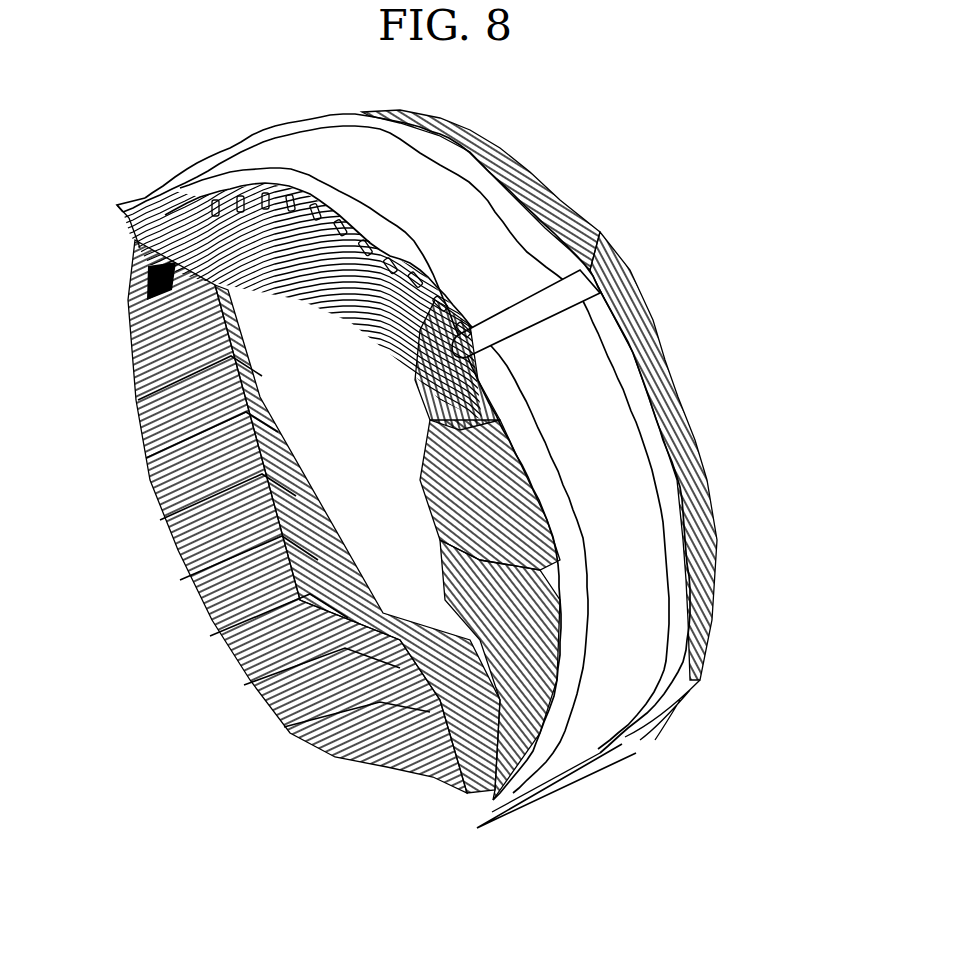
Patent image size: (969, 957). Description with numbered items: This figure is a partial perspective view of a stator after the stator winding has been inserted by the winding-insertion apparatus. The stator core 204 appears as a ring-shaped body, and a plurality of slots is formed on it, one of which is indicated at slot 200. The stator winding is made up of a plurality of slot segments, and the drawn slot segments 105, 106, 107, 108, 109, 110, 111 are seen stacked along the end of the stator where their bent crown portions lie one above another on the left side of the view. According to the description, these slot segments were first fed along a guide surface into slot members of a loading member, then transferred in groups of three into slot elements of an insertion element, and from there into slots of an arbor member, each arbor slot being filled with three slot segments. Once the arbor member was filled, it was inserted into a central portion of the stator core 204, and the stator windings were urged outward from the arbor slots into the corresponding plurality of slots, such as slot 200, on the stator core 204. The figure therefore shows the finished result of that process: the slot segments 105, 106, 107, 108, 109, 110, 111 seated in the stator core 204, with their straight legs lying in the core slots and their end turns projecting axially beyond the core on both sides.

The slot 200 is at (217, 200).
The stator core 204 is at (645, 530).
The slot segment 105 is at (153, 398).
The slot segment 106 is at (163, 457).
The slot segment 107 is at (173, 520).
The slot segment 108 is at (200, 580).
The slot segment 109 is at (227, 634).
The slot segment 110 is at (247, 683).
The slot segment 111 is at (288, 720).